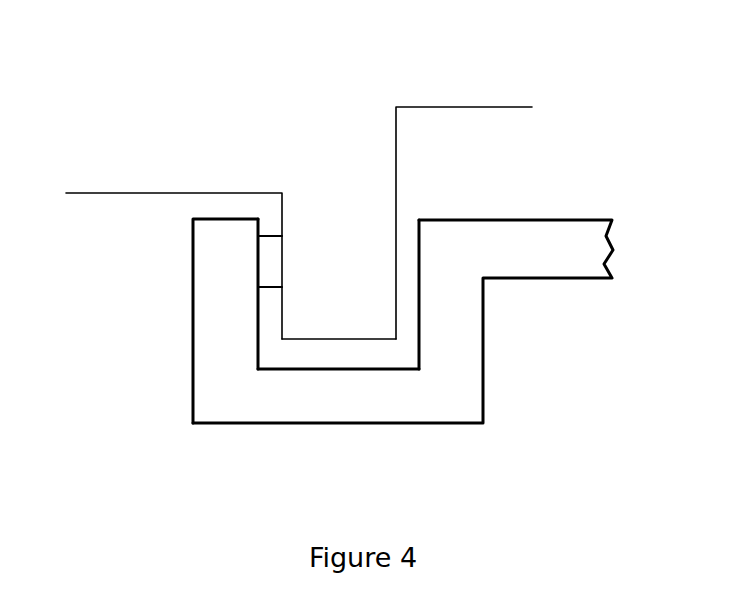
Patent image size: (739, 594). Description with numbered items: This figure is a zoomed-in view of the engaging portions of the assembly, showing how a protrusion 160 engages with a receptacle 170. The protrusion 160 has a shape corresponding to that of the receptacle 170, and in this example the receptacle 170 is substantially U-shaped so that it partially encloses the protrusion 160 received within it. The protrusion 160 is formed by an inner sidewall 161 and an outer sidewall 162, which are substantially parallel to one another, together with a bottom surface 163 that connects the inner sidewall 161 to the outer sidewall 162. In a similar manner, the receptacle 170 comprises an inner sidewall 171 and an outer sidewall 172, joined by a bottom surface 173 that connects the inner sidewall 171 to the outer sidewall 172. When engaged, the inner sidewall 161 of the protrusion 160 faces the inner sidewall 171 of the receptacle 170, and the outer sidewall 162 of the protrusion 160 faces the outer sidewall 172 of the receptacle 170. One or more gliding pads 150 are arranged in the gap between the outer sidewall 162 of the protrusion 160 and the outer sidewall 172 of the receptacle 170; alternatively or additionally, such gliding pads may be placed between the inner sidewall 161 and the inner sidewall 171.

The gliding pad 150 is at (273, 258).
The protrusion 160 is at (299, 276).
The inner sidewall 161 is at (394, 285).
The outer sidewall 162 is at (282, 296).
The bottom surface 163 is at (352, 335).
The receptacle 170 is at (343, 374).
The inner sidewall 171 is at (420, 330).
The outer sidewall 172 is at (258, 317).
The bottom surface 173 is at (332, 370).